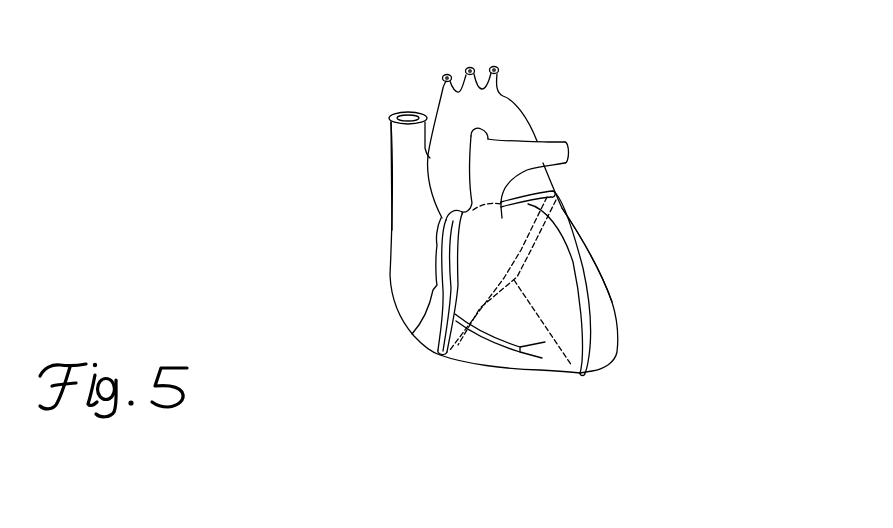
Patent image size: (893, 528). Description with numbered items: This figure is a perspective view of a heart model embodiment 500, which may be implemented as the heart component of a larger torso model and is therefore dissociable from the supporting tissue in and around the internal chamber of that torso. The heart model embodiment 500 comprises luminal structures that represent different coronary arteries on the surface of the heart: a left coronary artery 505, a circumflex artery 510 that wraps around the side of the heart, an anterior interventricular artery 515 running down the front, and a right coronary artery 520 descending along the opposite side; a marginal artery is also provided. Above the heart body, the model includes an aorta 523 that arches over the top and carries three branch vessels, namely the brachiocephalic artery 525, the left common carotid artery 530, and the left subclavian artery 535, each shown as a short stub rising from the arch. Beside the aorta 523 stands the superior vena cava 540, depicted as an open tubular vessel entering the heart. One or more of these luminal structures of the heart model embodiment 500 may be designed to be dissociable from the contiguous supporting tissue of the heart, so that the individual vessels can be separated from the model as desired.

The heart model embodiment 500 is at (218, 102).
The left coronary artery 505 is at (496, 181).
The circumflex artery 510 is at (518, 257).
The anterior interventricular artery 515 is at (606, 322).
The right coronary artery 520 is at (448, 295).
The aorta 523 is at (440, 163).
The brachiocephalic artery 525 is at (444, 76).
The left common carotid artery 530 is at (469, 68).
The left subclavian artery 535 is at (496, 67).
The superior vena cava 540 is at (407, 118).